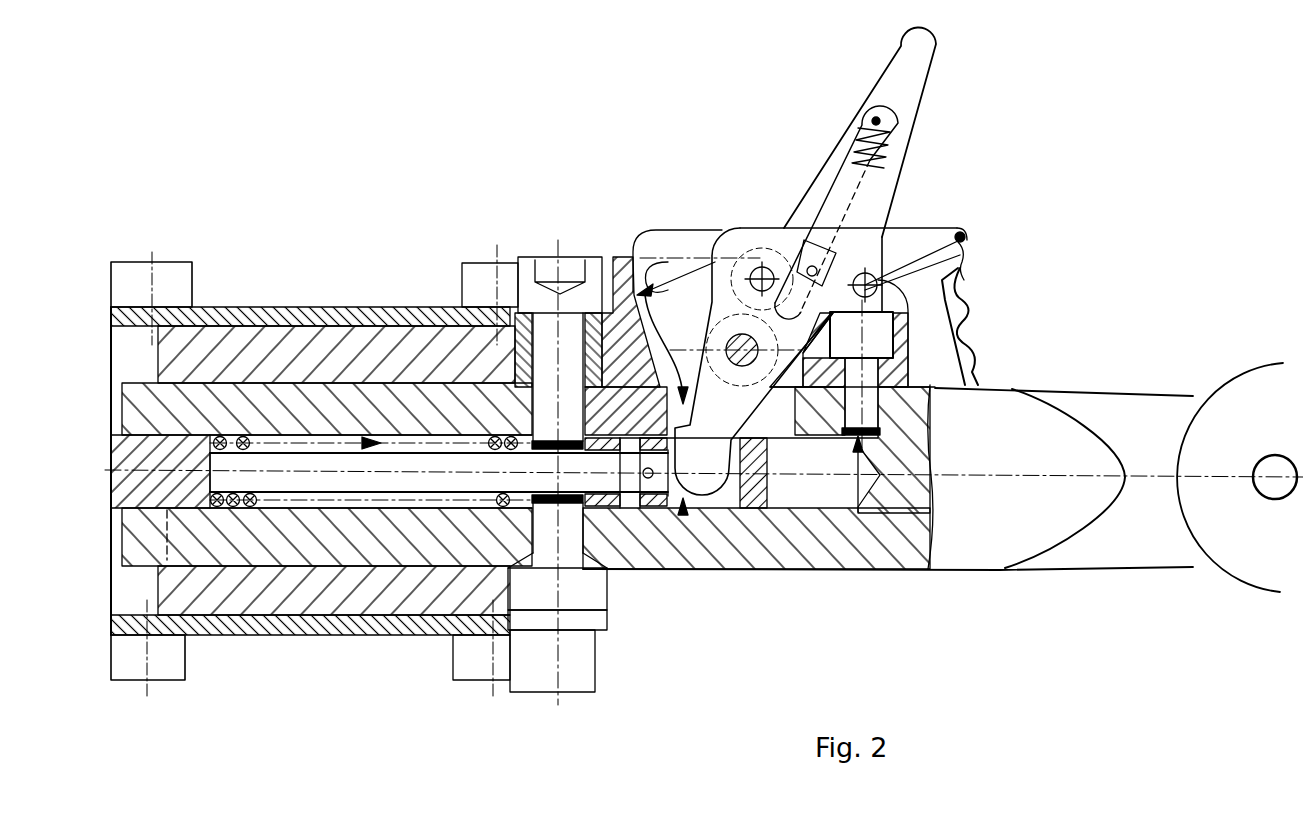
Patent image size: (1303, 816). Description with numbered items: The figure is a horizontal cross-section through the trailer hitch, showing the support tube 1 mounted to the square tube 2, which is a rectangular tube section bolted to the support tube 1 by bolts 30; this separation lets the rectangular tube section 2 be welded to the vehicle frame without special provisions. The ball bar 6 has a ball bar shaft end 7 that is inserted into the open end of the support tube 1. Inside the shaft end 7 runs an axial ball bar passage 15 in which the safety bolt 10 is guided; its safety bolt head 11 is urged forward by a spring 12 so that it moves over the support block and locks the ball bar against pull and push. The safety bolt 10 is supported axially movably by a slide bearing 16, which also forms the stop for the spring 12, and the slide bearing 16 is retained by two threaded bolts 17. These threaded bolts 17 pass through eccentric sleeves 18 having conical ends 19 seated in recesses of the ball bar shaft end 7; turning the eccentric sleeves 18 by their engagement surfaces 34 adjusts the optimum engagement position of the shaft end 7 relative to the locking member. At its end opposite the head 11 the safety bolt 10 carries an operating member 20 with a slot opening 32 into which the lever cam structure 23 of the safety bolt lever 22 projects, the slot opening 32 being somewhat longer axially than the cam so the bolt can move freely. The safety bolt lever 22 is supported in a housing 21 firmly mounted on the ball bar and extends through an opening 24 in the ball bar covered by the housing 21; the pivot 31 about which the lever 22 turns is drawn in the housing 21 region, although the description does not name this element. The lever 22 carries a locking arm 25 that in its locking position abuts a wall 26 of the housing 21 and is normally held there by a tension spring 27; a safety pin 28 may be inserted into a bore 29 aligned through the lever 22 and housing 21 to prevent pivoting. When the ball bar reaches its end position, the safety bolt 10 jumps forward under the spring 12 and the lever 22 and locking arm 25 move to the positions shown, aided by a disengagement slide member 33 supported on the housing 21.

The support tube 1 is at (248, 340).
The square tube 2 is at (401, 318).
The ball bar 6 is at (1228, 395).
The ball bar shaft end 7 is at (985, 548).
The safety bolt 10 is at (296, 455).
The safety bolt head 11 is at (195, 450).
The spring 12 is at (233, 512).
The ball bar passage 15 is at (355, 440).
The slide bearing 16 is at (500, 530).
The threaded bolts 17 is at (527, 262).
The eccentric sleeves 18 is at (498, 350).
The conical ends 19 is at (600, 555).
The operating member 20 is at (756, 512).
The housing 21 is at (905, 348).
The safety bolt lever 22 is at (920, 70).
The lever cam structure 23 is at (718, 512).
The opening 24 is at (596, 300).
The locking arm 25 is at (690, 232).
The housing wall 26 is at (650, 248).
The tension spring 27 is at (855, 140).
The safety pin 28 is at (978, 368).
The bore 29 is at (972, 252).
The bolts 30 is at (196, 286).
The pivot pin 31 is at (730, 338).
The slot opening 32 is at (688, 512).
The disengagement slide member 33 is at (753, 243).
The engagement surfaces 34 is at (590, 622).